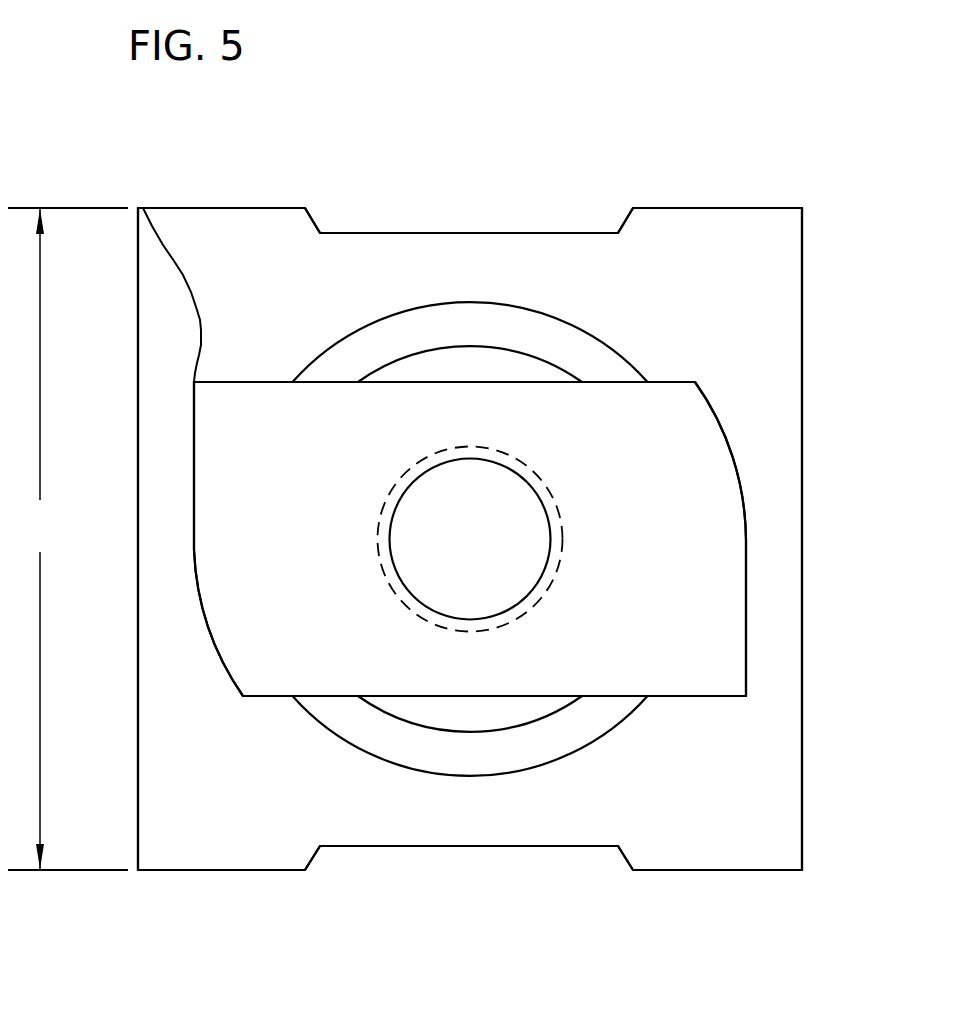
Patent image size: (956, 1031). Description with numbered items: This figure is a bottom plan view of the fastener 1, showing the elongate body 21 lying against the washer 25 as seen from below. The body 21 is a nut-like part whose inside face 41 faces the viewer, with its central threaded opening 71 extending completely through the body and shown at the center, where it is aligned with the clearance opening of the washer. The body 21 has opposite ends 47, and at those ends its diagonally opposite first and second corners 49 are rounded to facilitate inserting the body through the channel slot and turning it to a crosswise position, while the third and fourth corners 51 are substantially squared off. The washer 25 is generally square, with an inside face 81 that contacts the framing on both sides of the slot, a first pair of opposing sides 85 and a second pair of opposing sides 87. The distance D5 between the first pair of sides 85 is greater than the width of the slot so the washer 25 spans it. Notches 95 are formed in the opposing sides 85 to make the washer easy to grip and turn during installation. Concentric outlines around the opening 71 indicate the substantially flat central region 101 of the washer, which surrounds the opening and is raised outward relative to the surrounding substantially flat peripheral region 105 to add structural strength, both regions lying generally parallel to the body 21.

The fastener 1 is at (767, 118).
The elongate body 21 is at (748, 615).
The washer 25 is at (719, 872).
The inside face 41 is at (707, 577).
The opposite ends 47 is at (194, 436).
The first and second corners 49 is at (207, 628).
The third and fourth corners 51 is at (143, 208).
The central threaded opening 71 is at (470, 539).
The inside face 81 is at (770, 245).
The first pair of opposing sides 85 is at (676, 207).
The second pair of opposing sides 87 is at (138, 763).
The notches 95 is at (316, 220).
The central region 101 is at (480, 365).
The peripheral region 105 is at (516, 825).
The distance between opposing sides D5 is at (68, 539).